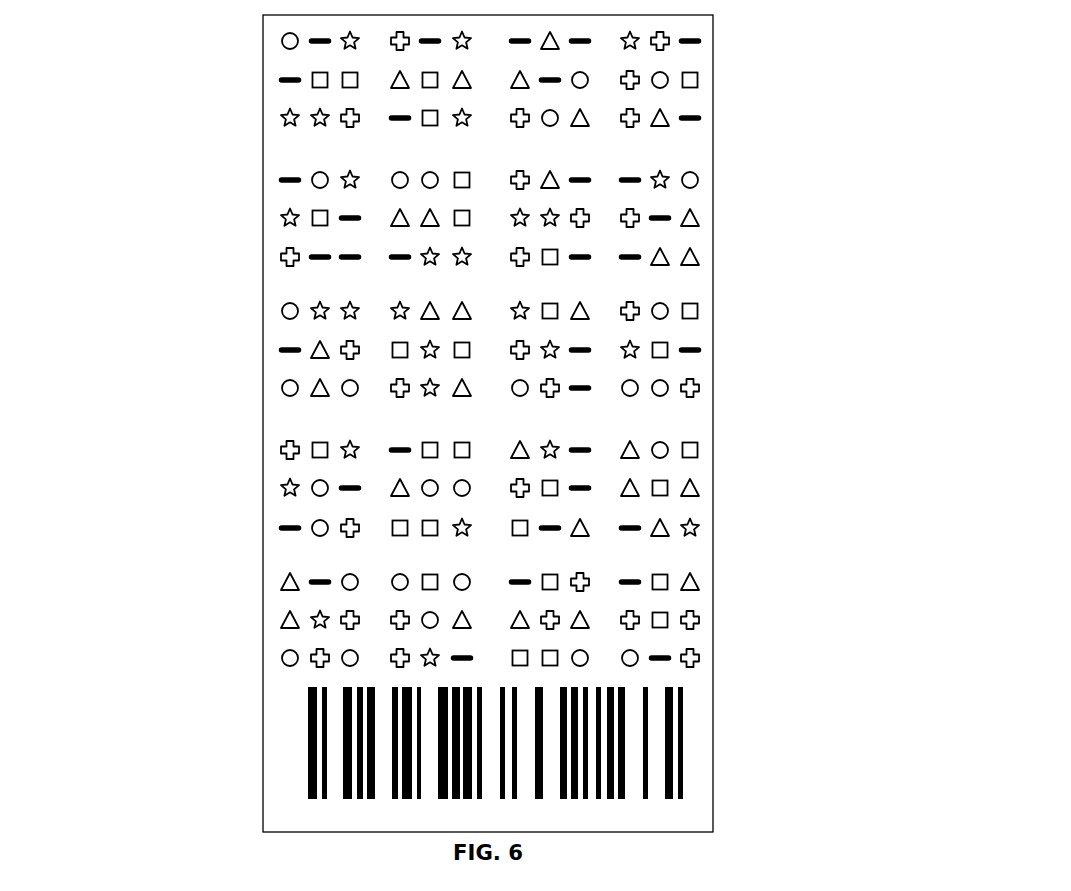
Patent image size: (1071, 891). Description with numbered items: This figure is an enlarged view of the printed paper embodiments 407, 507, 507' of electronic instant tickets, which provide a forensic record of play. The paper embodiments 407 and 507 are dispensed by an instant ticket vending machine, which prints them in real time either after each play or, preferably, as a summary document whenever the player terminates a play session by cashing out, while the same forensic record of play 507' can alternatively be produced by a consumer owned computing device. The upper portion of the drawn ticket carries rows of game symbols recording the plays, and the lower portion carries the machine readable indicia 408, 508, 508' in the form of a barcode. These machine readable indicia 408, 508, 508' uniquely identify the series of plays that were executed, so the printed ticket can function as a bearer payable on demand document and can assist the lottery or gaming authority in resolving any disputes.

The paper embodiment 407 is at (364, 350).
The paper embodiment 507 is at (490, 350).
The forensic record of play 507' is at (490, 350).
The machine readable indicia 408 is at (627, 759).
The machine readable indicia 508 is at (495, 743).
The machine readable indicia 508' is at (495, 743).